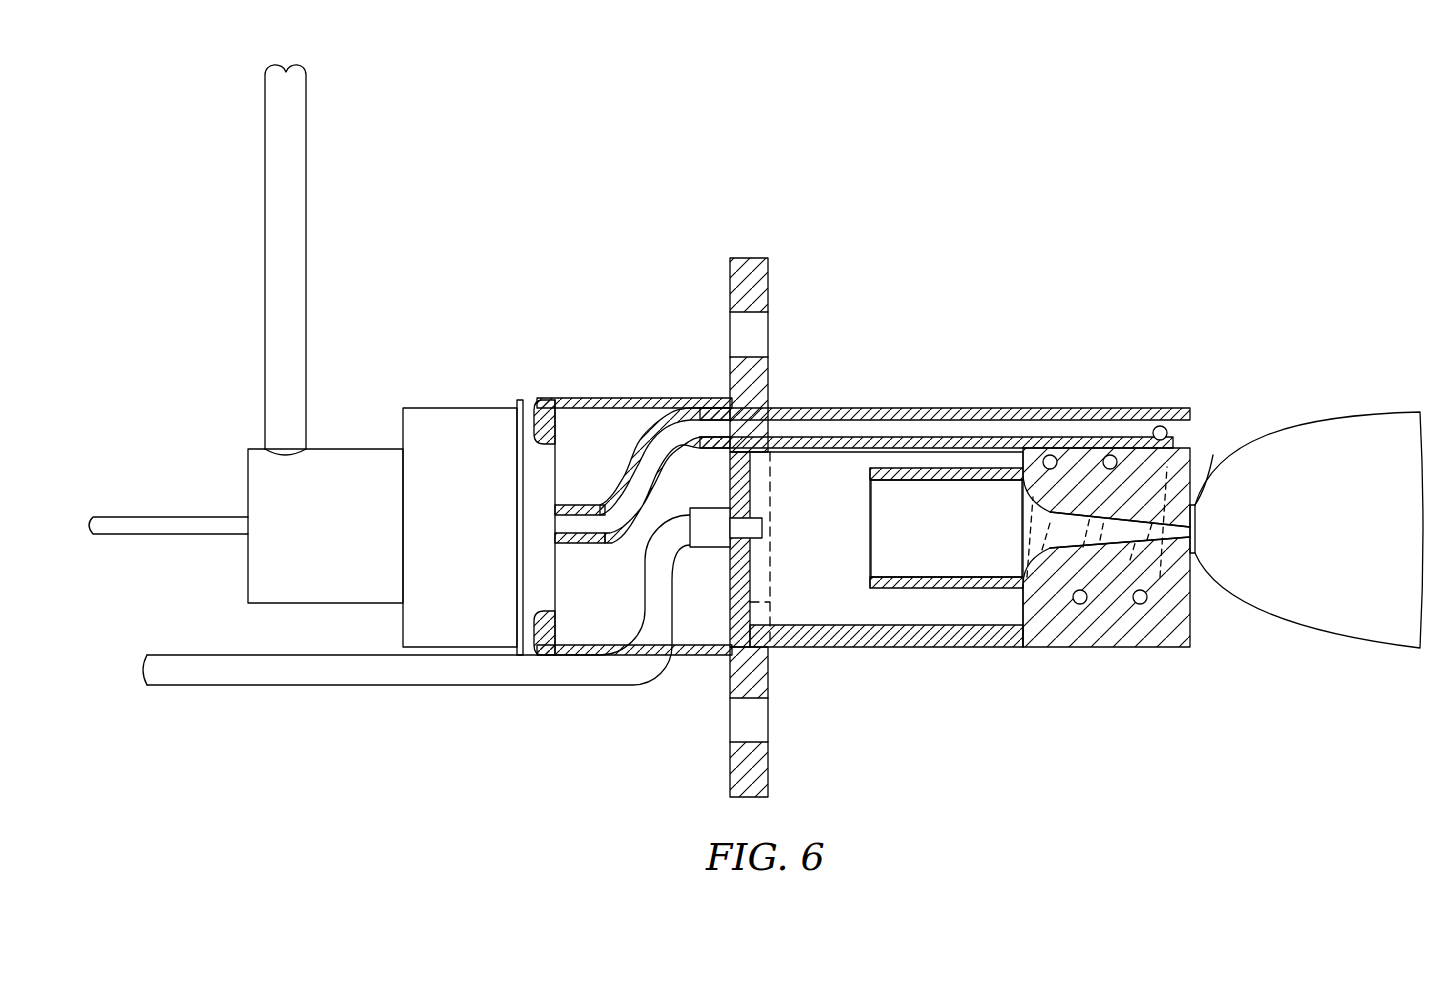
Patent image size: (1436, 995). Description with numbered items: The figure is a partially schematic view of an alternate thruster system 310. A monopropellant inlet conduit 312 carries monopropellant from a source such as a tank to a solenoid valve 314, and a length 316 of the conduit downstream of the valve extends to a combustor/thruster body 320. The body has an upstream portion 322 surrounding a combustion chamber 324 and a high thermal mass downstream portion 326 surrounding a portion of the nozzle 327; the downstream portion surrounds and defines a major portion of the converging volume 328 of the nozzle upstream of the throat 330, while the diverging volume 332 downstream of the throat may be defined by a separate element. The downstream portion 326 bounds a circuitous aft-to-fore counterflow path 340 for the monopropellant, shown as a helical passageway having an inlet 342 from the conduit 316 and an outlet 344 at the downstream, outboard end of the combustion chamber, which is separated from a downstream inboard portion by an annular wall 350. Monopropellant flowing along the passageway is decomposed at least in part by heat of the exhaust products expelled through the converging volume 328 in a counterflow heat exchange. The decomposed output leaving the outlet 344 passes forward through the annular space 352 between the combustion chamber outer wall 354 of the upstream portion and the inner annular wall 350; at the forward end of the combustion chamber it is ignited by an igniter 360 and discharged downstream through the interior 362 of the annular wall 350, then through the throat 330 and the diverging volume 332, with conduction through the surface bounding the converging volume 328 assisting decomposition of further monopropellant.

The thruster system 310 is at (872, 277).
The monopropellant inlet conduit 312 is at (298, 293).
The solenoid valve 314 is at (436, 440).
The length of conduit 316 is at (638, 430).
The combustor/thruster body 320 is at (1007, 641).
The upstream portion 322 is at (843, 641).
The combustion chamber 324 is at (837, 565).
The downstream portion 326 is at (1145, 637).
The nozzle 327 is at (1212, 453).
The converging volume 328 is at (1072, 528).
The throat 330 is at (1203, 530).
The diverging volume 332 is at (1360, 604).
The counterflow path 340 is at (1146, 601).
The inlet 342 is at (1163, 426).
The outlet 344 is at (1020, 596).
The annular wall 350 is at (909, 480).
The annular space 352 is at (896, 604).
The combustion chamber outer wall 354 is at (941, 645).
The igniter 360 is at (766, 522).
The interior 362 is at (997, 540).